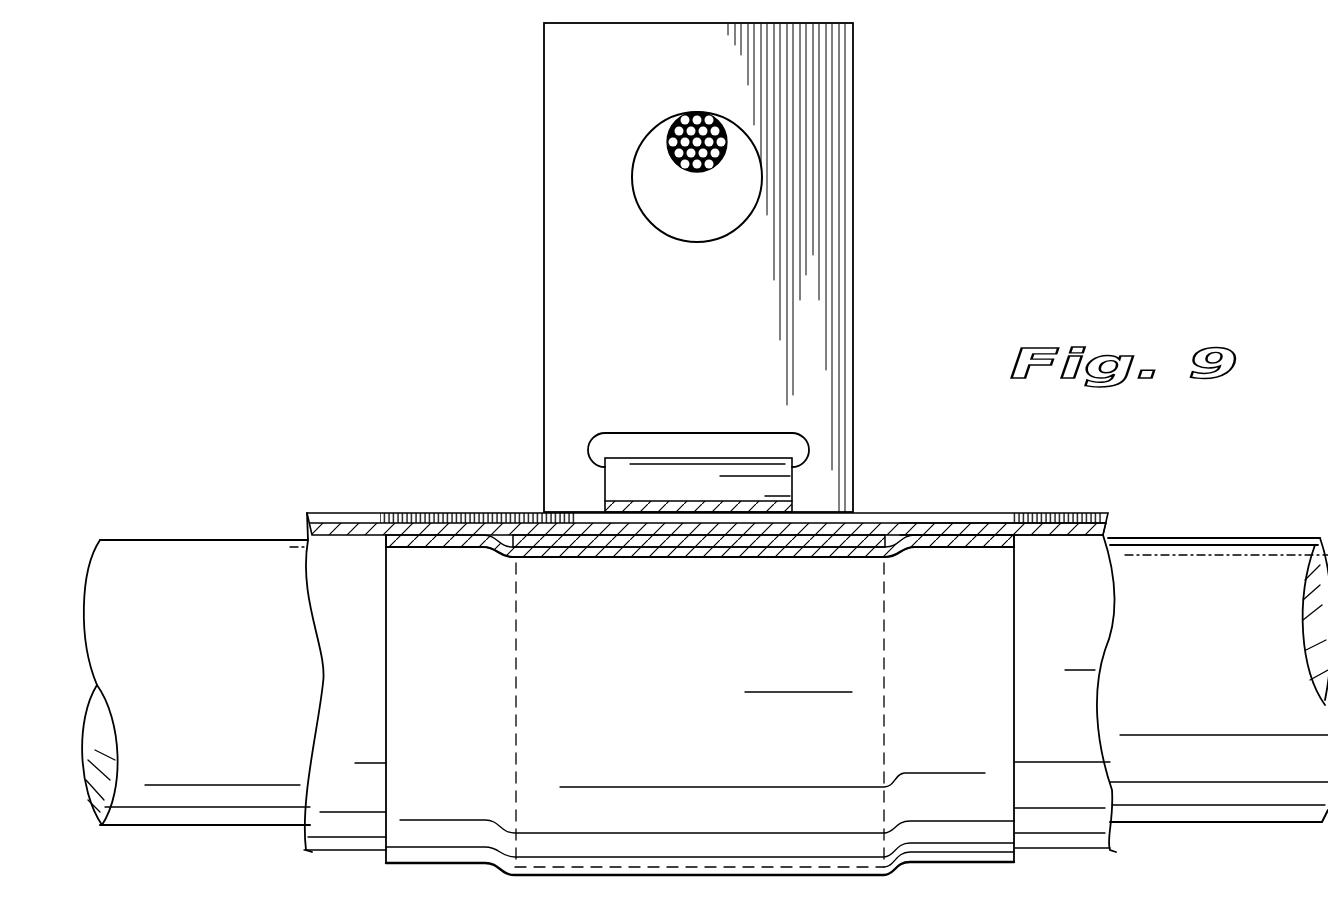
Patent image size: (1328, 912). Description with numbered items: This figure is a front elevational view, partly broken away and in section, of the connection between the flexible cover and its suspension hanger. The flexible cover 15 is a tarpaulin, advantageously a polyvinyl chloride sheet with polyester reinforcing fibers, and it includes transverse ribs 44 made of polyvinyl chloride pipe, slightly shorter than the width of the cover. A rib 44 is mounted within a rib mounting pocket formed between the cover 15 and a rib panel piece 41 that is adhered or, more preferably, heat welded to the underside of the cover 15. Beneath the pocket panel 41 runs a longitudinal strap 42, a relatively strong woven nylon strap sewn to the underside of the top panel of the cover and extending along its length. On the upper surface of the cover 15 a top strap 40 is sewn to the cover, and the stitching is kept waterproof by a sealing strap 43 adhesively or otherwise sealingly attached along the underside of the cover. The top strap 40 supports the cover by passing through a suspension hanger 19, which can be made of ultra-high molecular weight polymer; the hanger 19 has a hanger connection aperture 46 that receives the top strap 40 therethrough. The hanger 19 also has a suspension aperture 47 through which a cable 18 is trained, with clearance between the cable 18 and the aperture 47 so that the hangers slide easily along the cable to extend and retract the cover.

The flexible cover 15 is at (340, 518).
The cable 18 is at (672, 150).
The suspension hanger 19 is at (605, 320).
The top strap 40 is at (668, 482).
The rib panel piece 41 is at (960, 530).
The longitudinal strap 42 is at (640, 549).
The sealing strap 43 is at (763, 558).
The transverse rib 44 is at (203, 683).
The hanger connection aperture 46 is at (728, 430).
The suspension aperture 47 is at (626, 180).